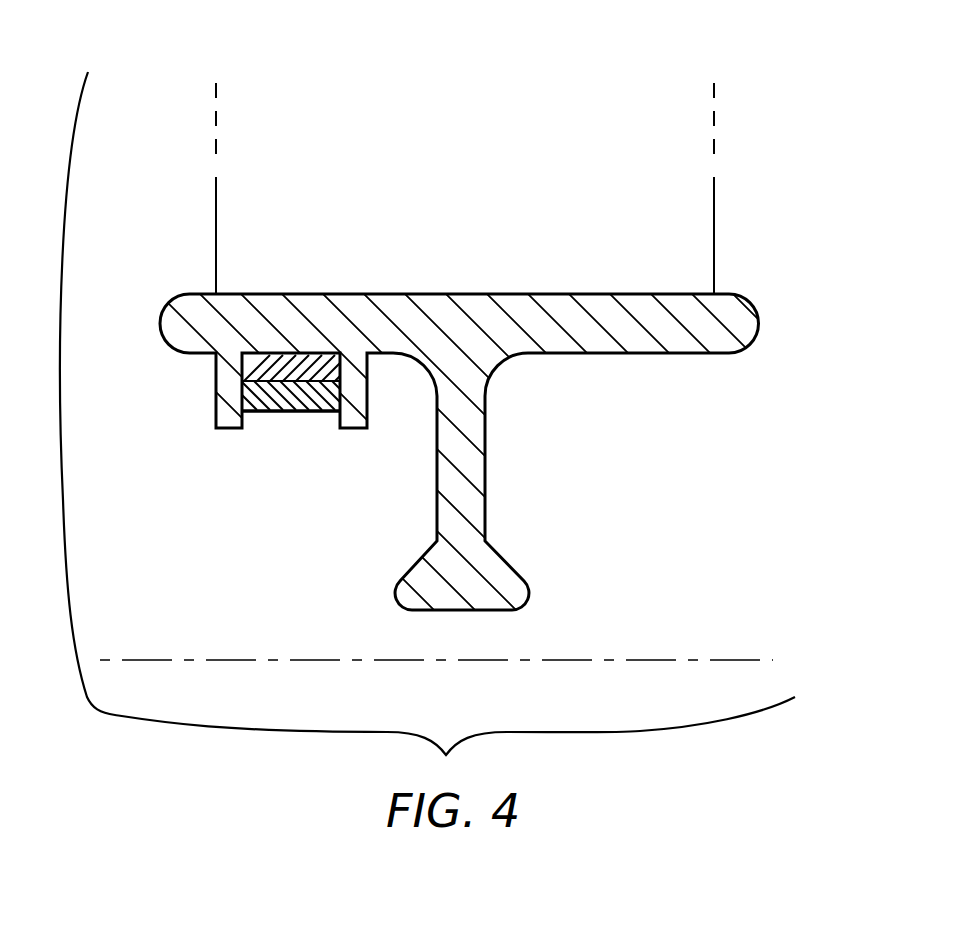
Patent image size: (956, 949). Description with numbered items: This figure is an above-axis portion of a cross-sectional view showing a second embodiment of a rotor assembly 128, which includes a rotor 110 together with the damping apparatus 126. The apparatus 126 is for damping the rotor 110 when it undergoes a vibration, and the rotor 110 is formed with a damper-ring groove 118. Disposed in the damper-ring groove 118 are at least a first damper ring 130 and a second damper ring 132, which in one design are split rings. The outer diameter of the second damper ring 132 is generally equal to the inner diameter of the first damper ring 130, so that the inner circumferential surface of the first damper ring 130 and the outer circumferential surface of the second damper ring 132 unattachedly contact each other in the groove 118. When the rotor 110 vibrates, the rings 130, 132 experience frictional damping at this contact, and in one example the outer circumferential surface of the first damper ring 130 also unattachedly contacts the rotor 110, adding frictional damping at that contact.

The rotor 110 is at (723, 293).
The rotor assembly 128 is at (735, 125).
The damper-ring groove 118 is at (271, 358).
The first damper ring 130 is at (297, 366).
The second damper ring 132 is at (276, 401).
The apparatus 126 is at (313, 414).